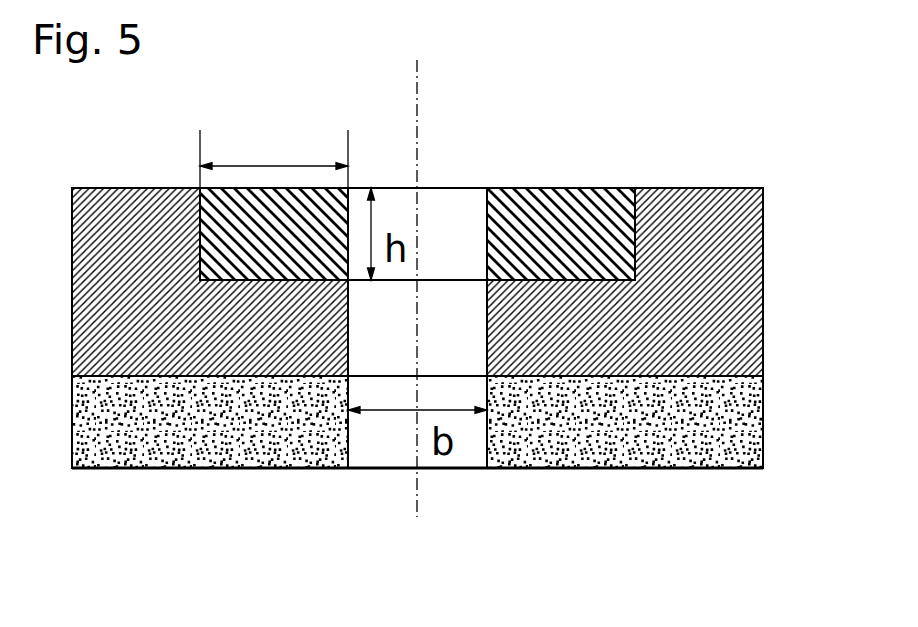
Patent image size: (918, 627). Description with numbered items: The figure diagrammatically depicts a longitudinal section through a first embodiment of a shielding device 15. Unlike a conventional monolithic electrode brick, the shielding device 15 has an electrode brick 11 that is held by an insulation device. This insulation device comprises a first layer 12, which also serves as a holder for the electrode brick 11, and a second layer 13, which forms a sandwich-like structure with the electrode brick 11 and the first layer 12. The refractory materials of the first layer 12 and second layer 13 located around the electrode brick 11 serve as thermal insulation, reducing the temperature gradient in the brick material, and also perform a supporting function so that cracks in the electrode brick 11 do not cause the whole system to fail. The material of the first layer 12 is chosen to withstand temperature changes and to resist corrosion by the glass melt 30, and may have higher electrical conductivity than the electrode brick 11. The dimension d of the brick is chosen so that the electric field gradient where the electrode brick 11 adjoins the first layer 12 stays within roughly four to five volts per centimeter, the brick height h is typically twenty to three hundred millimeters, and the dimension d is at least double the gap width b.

The electrode brick 11 is at (525, 188).
The first layer 12 is at (670, 217).
The second layer 13 is at (200, 433).
The shielding device 15 is at (525, 113).
The glass melt 30 is at (278, 176).